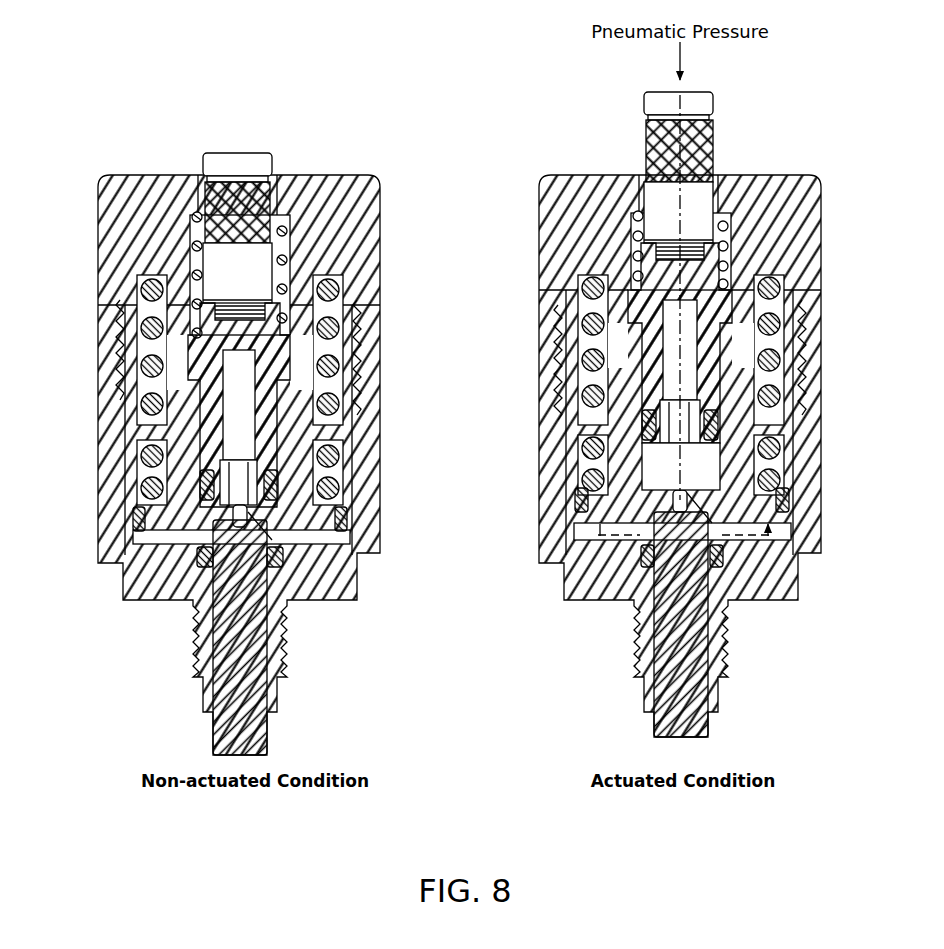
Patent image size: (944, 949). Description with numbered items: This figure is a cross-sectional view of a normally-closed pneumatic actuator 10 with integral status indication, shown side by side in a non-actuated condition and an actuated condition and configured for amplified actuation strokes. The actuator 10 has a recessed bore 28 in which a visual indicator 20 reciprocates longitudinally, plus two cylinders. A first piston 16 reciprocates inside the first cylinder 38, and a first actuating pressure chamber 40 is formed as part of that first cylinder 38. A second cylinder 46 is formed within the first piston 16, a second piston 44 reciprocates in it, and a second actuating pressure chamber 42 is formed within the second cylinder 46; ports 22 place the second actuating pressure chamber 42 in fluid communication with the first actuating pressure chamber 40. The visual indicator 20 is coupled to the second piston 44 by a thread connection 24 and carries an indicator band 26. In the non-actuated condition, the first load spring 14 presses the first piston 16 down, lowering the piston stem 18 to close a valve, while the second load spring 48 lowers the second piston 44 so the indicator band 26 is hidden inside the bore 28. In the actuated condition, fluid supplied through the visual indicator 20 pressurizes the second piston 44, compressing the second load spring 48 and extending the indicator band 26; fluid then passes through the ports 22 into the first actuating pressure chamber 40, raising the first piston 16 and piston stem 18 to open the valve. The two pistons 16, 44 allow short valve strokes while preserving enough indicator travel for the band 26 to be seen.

The pneumatic actuator 10 is at (147, 78).
The first load spring 14 is at (348, 316).
The first piston 16 is at (172, 520).
The piston stem 18 is at (243, 676).
The visual indicator 20 is at (228, 263).
The ports 22 is at (342, 506).
The thread connection 24 is at (216, 335).
The indicator band 26 is at (724, 149).
The recessed bore 28 is at (196, 192).
The first cylinder 38 is at (90, 445).
The first actuating pressure chamber 40 is at (738, 512).
The second actuating pressure chamber 42 is at (659, 474).
The second piston 44 is at (166, 368).
The second cylinder 46 is at (193, 450).
The second load spring 48 is at (292, 236).